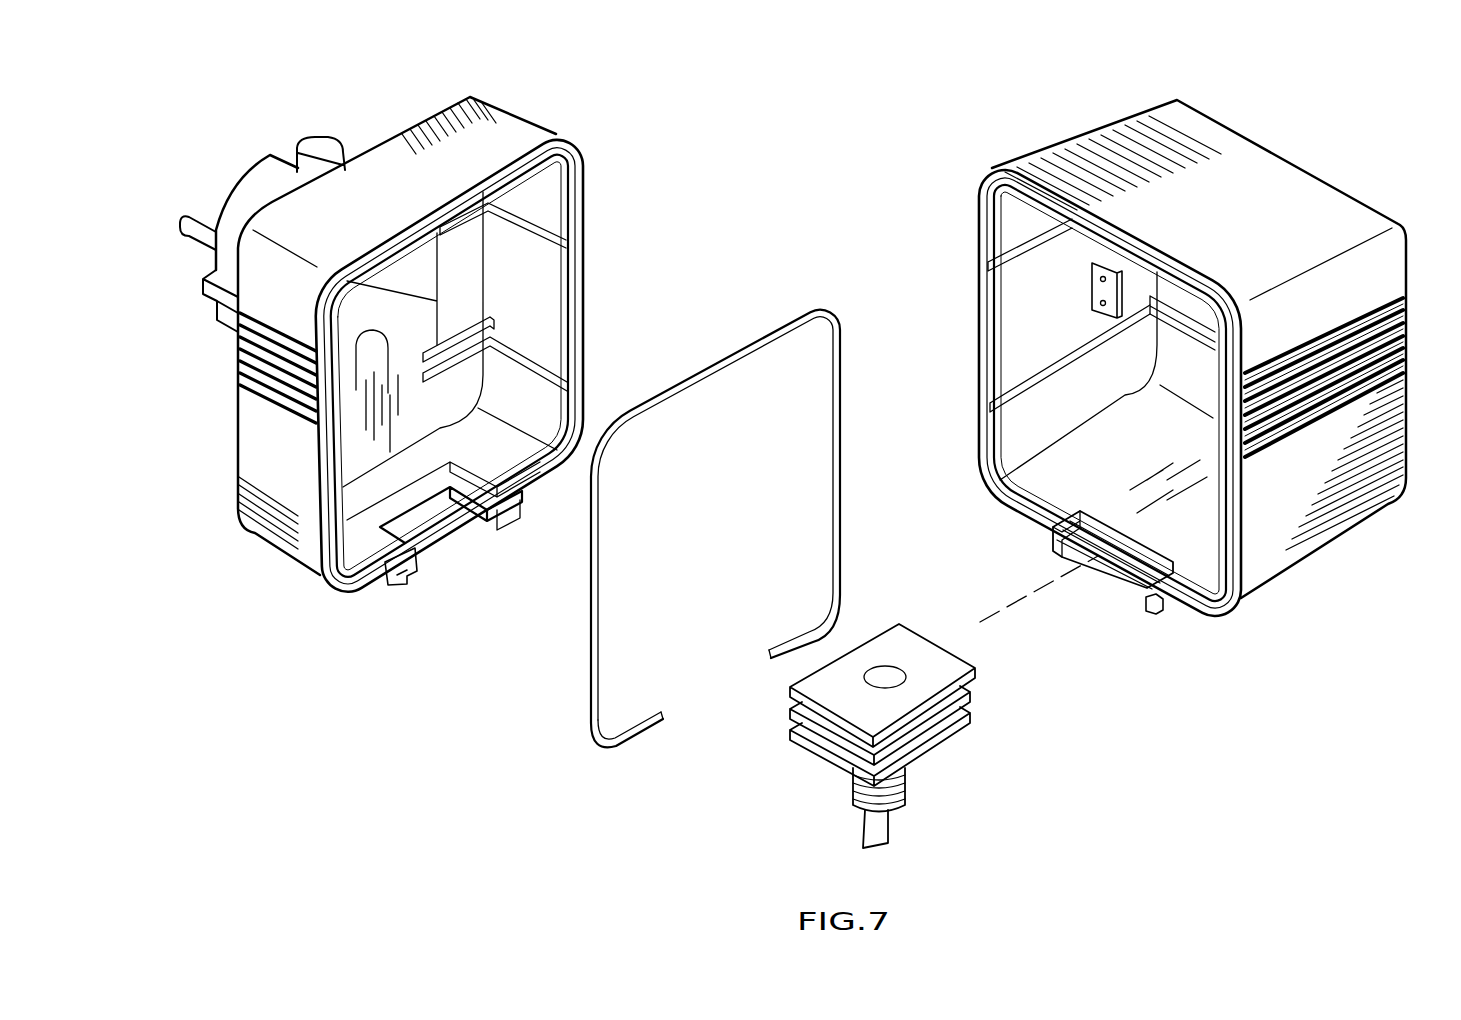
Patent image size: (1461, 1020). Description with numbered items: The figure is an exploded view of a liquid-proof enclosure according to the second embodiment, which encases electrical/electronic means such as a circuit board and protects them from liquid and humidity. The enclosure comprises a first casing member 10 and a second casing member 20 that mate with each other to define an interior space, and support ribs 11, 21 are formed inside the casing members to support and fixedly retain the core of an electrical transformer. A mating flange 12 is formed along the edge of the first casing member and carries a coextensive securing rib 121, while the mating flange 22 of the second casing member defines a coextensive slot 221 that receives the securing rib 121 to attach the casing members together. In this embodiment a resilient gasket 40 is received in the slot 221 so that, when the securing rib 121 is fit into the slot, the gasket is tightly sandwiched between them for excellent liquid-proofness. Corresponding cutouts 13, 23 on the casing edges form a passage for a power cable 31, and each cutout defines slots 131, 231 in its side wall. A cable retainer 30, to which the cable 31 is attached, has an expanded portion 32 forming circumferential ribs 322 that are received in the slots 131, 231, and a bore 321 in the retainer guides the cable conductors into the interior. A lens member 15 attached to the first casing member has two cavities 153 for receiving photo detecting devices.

The first casing member 10 is at (1330, 510).
The support ribs 11 is at (980, 258).
The mating flange 12 is at (1242, 526).
The securing rib 121 is at (1222, 590).
The cutout 13 is at (1160, 610).
The slot 131 is at (1052, 543).
The lens member 15 is at (1097, 291).
The cavities 153 is at (1097, 280).
The second casing member 20 is at (426, 133).
The support ribs 21 is at (563, 230).
The mating flange 22 is at (497, 172).
The slot 221 is at (578, 190).
The cutout 23 is at (389, 583).
The slot 231 is at (423, 490).
The cable retainer 30 is at (856, 774).
The power cable 31 is at (892, 828).
The expanded portion 32 is at (863, 653).
The bore 321 is at (888, 680).
The circumferential ribs 322 is at (974, 696).
The resilient gasket 40 is at (752, 335).